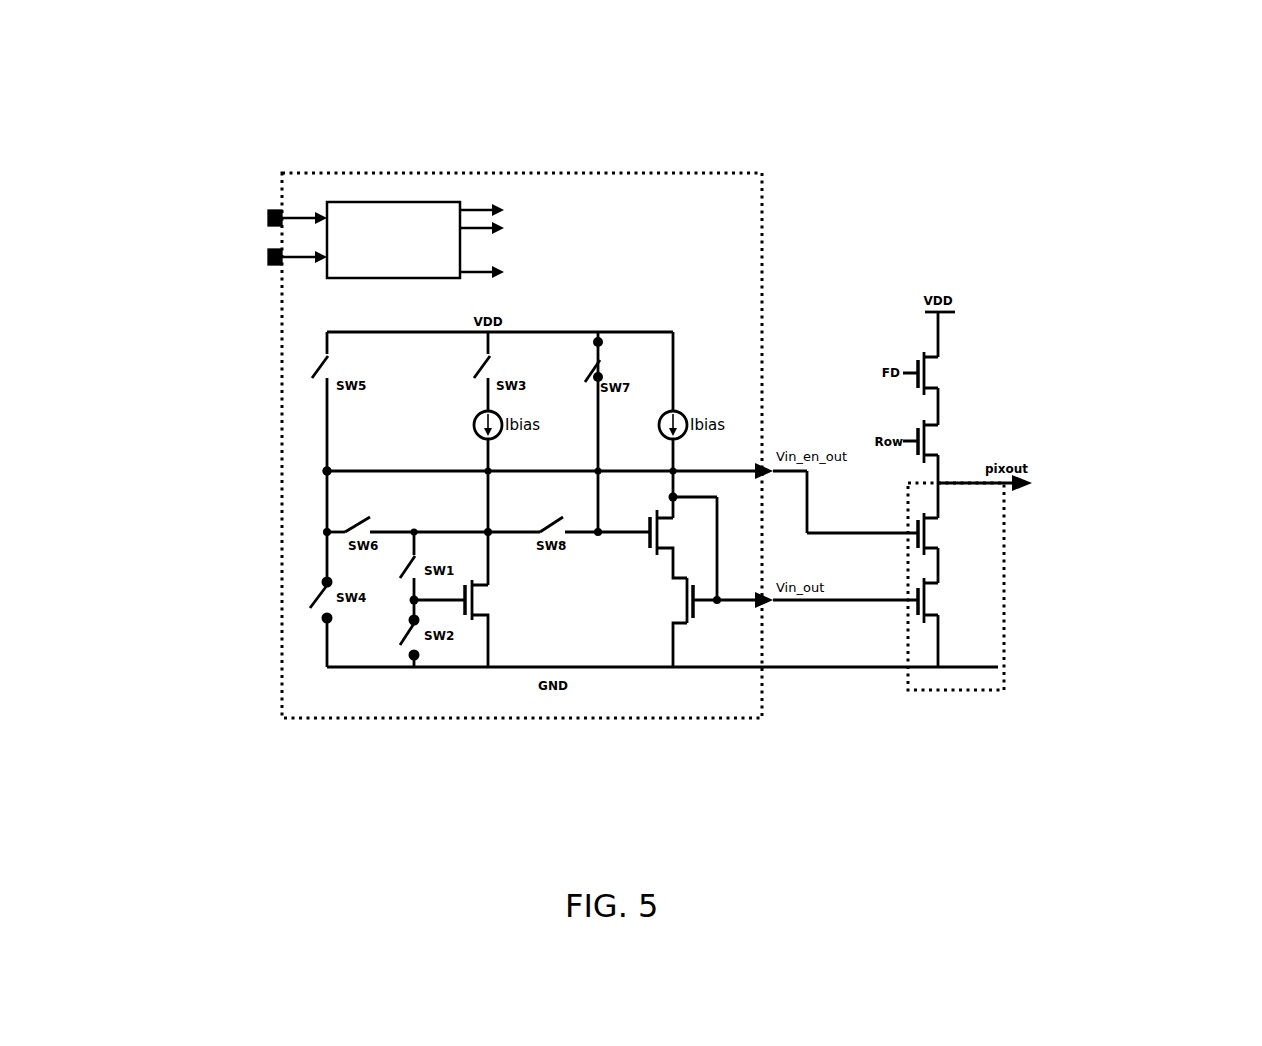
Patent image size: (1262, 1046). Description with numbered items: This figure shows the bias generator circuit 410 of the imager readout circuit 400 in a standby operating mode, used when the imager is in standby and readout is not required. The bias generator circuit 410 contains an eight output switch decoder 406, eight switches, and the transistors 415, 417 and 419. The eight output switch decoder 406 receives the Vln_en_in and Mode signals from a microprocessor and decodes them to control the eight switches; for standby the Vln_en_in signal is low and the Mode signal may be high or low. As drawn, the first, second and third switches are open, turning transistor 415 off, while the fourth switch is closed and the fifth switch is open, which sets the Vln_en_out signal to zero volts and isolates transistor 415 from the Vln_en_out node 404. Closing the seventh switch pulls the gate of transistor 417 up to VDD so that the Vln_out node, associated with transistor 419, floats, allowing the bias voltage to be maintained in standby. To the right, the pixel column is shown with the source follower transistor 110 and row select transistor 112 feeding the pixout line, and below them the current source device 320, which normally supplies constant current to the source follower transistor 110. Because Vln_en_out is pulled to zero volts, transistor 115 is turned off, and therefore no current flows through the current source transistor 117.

The imager readout circuit 400 is at (968, 78).
The bias generator circuit 410 is at (312, 164).
The eight output switch decoder 406 is at (320, 282).
The Vln_en_out node 404 is at (308, 470).
The transistor 415 is at (495, 623).
The transistor 417 is at (677, 544).
The transistor 419 is at (677, 622).
The source follower transistor 110 is at (939, 373).
The row select transistor 112 is at (939, 441).
The transistor 115 is at (947, 534).
The current source transistor 117 is at (947, 600).
The current source device 320 is at (1025, 580).